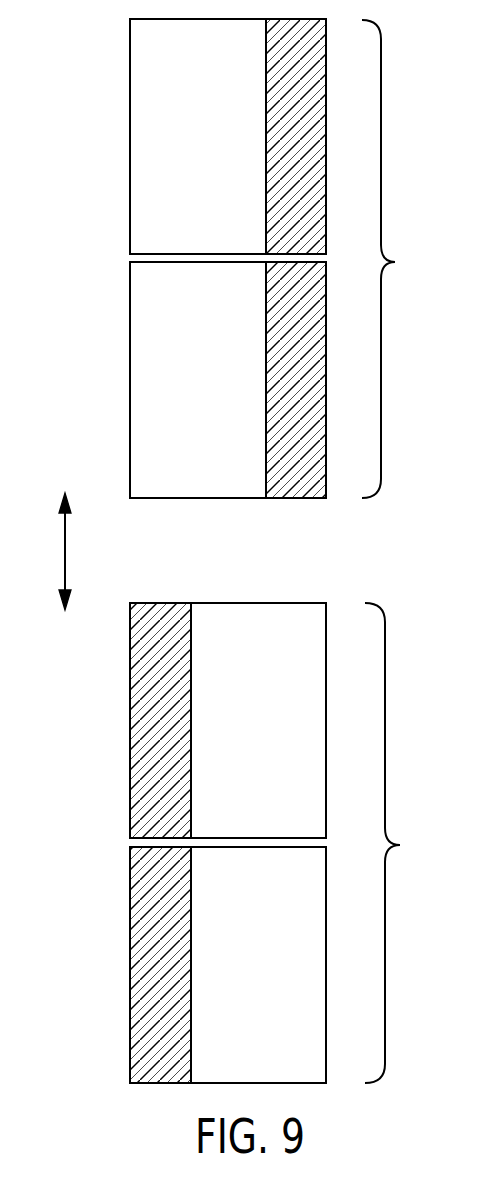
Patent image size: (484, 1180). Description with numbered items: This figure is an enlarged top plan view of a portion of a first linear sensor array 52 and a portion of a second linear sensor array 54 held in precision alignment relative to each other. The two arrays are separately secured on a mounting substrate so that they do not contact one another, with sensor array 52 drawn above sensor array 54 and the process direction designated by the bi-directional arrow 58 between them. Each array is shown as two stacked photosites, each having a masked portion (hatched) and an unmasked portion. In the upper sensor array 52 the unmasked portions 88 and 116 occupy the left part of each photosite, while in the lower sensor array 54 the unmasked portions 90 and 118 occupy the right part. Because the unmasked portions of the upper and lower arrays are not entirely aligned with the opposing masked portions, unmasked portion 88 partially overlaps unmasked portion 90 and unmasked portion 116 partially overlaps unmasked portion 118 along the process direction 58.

The sensor array 52 is at (395, 262).
The sensor array 54 is at (400, 845).
The bi-directional arrow 58 is at (63, 553).
The unmasked portion 88 is at (145, 138).
The unmasked portion 90 is at (225, 753).
The unmasked portion 116 is at (145, 375).
The unmasked portion 118 is at (232, 995).